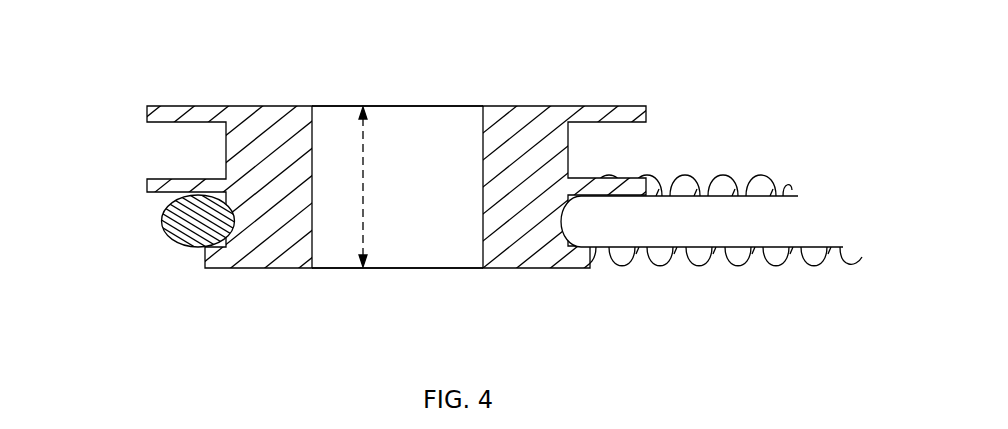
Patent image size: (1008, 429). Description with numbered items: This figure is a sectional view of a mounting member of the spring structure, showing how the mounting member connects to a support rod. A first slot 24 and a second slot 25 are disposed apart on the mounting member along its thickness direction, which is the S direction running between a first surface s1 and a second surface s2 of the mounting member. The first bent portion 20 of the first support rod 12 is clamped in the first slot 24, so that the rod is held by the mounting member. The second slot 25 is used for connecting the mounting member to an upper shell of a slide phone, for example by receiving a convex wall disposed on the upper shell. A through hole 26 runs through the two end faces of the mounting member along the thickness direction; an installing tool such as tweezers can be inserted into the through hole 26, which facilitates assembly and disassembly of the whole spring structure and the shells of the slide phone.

The first support rod 12 is at (731, 226).
The first bent portion 20 is at (153, 205).
The first slot 24 is at (178, 247).
The second slot 25 is at (618, 147).
The through hole 26 is at (408, 117).
The first surface s1 is at (477, 106).
The second surface s2 is at (418, 270).